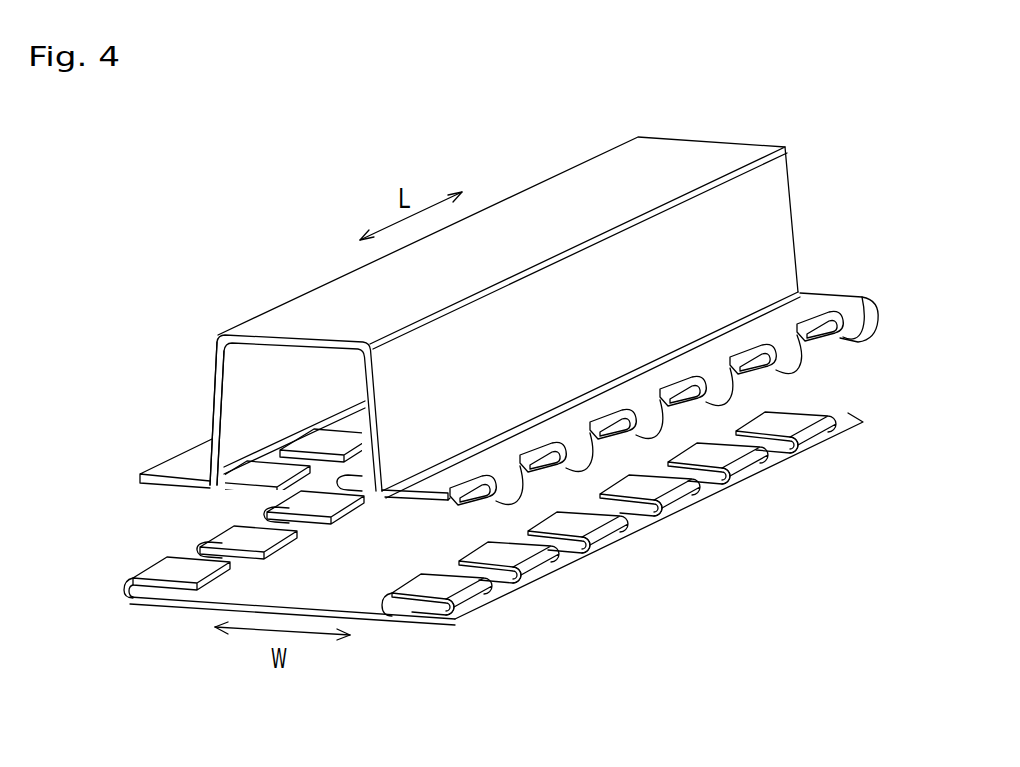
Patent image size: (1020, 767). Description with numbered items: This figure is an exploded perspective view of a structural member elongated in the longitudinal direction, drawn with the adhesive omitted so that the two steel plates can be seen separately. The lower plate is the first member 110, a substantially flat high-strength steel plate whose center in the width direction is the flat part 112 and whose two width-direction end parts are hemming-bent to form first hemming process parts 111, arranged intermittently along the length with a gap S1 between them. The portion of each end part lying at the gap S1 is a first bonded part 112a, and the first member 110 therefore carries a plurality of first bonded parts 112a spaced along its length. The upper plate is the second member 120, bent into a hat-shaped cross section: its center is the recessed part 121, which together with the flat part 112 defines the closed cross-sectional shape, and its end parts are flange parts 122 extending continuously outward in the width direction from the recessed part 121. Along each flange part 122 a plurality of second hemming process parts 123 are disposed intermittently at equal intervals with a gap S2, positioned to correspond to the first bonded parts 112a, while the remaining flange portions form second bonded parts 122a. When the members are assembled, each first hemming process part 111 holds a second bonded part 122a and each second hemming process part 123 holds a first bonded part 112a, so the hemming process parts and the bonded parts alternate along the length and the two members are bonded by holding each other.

The first member 110 is at (171, 607).
The first hemming process part 111 is at (218, 527).
The flat part 112 is at (380, 622).
The first bonded part 112a is at (780, 447).
The second member 120 is at (290, 305).
The recessed part 121 is at (211, 381).
The flange part 122 is at (187, 462).
The second bonded part 122a is at (598, 418).
The second hemming process part 123 is at (602, 452).
The gap S1 is at (480, 560).
The gap S2 is at (760, 382).